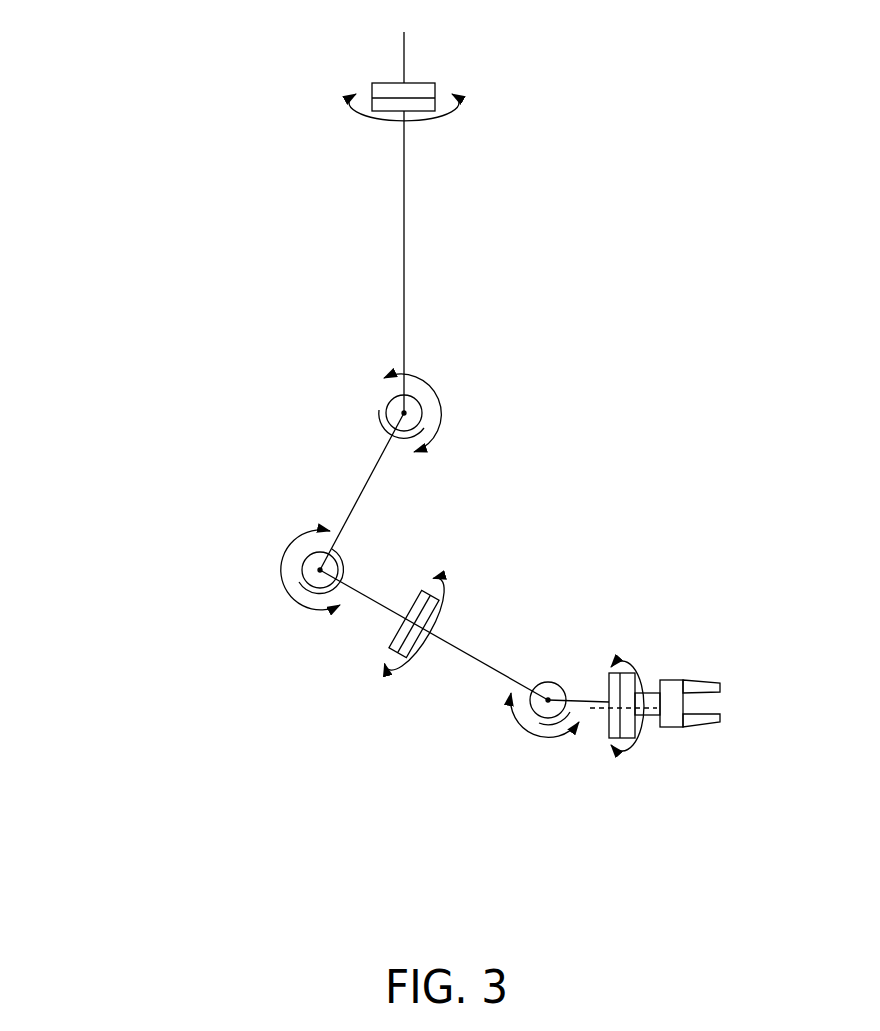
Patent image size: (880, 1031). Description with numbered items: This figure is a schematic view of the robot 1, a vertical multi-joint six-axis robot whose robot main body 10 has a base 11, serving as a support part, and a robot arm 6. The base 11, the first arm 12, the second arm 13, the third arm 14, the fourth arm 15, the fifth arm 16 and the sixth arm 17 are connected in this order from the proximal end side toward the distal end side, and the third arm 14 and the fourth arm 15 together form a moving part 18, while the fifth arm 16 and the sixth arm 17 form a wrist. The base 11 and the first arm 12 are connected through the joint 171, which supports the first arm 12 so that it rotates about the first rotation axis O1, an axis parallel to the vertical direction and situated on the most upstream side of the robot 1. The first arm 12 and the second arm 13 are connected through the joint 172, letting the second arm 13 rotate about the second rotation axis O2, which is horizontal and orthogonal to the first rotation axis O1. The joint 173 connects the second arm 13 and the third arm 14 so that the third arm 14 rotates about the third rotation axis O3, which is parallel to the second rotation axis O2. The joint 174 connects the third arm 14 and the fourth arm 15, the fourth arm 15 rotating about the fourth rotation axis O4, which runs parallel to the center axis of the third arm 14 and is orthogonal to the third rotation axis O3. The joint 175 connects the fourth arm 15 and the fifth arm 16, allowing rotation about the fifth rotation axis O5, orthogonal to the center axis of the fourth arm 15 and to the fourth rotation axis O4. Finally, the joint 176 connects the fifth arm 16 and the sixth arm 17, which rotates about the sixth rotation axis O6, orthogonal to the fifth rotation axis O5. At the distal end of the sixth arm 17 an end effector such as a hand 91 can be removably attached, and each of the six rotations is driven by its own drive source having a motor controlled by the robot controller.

The robot 1 is at (254, 627).
The robot arm 6 is at (250, 433).
The robot main body 10 is at (272, 513).
The base 11 is at (393, 46).
The first arm 12 is at (388, 247).
The second arm 13 is at (392, 495).
The third arm 14 is at (325, 628).
The fourth arm 15 is at (490, 733).
The fifth arm 16 is at (590, 690).
The sixth arm 17 is at (635, 648).
The moving part 18 is at (335, 642).
The joint 171 is at (340, 108).
The joint 172 is at (363, 443).
The joint 173 is at (360, 562).
The joint 174 is at (383, 676).
The joint 175 is at (535, 672).
The joint 176 is at (618, 767).
The hand 91 is at (675, 727).
The first rotation axis O1 is at (397, 124).
The second rotation axis O2 is at (385, 425).
The third rotation axis O3 is at (345, 553).
The fourth rotation axis O4 is at (392, 622).
The fifth rotation axis O5 is at (565, 672).
The sixth rotation axis O6 is at (586, 744).